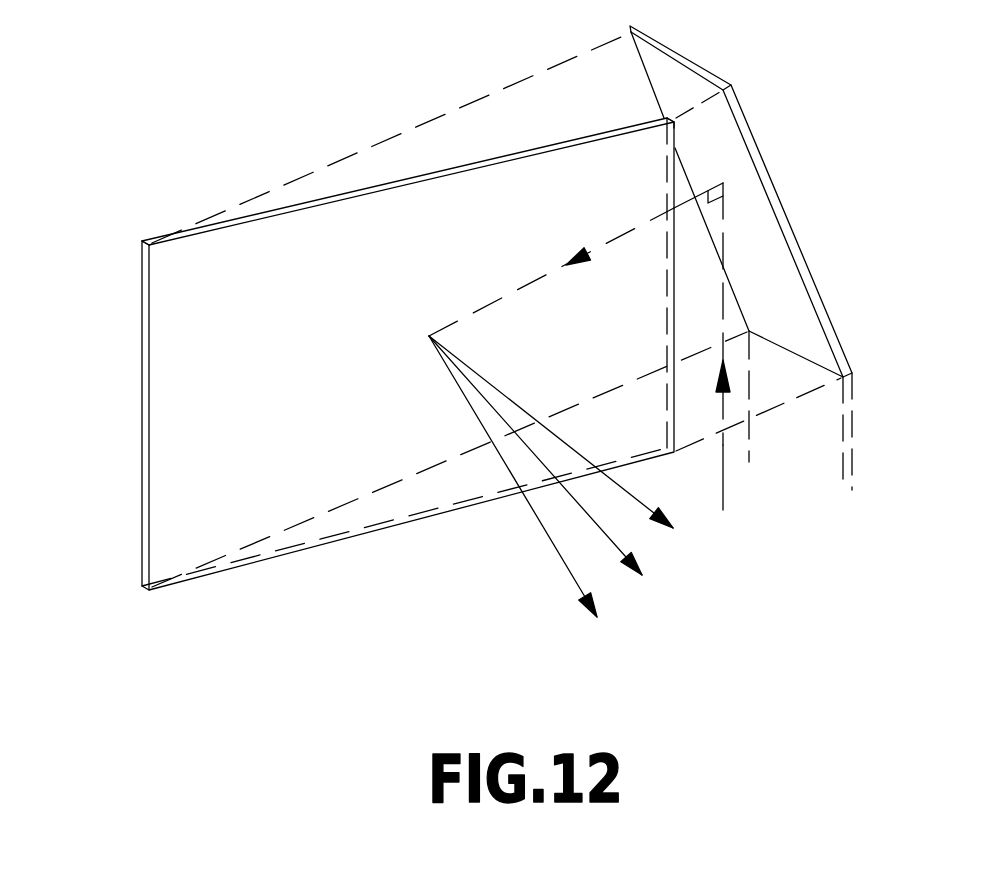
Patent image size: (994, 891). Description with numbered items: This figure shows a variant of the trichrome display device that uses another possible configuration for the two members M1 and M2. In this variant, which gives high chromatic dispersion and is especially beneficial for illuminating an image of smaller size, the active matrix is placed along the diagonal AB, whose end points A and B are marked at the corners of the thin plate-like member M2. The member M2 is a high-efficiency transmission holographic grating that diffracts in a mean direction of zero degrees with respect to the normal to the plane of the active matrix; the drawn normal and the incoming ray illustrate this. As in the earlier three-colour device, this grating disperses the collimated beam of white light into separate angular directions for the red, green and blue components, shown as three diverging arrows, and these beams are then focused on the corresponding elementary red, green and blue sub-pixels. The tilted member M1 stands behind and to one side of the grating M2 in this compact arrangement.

The member M1 is at (767, 165).
The high-efficiency transmission holographic grating M2 is at (141, 356).
The end point A of diagonal AB A is at (134, 228).
The end point B of diagonal AB B is at (670, 102).